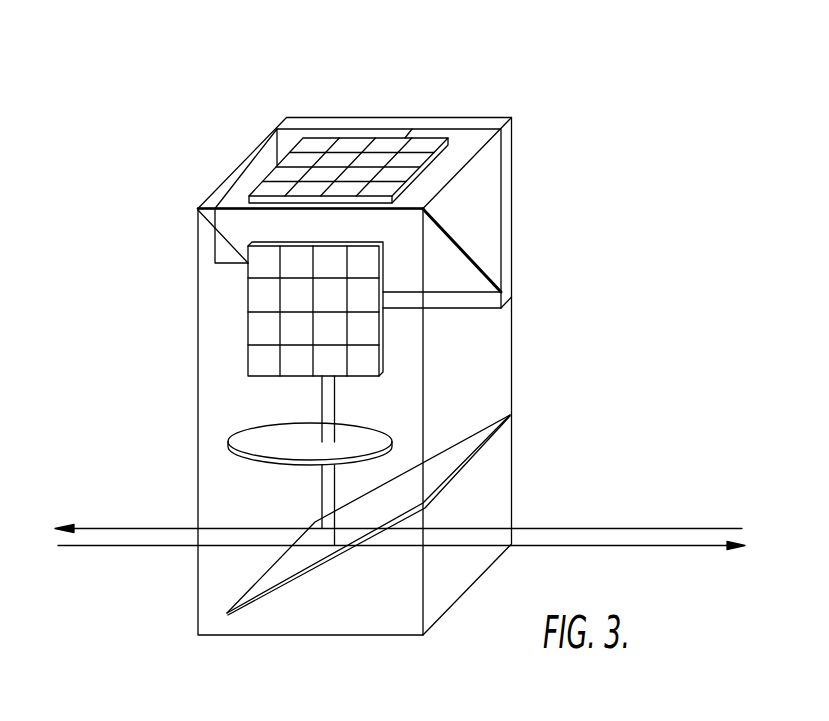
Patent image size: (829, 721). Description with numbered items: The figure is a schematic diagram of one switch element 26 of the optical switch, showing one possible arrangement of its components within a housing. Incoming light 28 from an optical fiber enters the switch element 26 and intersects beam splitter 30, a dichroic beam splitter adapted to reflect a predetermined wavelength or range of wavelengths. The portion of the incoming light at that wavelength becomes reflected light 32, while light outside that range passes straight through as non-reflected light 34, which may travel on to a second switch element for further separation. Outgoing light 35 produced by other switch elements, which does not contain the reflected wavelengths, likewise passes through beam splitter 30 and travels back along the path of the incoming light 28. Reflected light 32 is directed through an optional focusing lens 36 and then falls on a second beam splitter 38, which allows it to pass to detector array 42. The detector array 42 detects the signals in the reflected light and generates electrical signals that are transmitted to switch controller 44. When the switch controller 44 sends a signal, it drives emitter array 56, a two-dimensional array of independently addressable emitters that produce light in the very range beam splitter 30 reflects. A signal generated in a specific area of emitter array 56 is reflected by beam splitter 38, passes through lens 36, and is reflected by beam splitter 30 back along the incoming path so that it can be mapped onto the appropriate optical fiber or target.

The switch element 26 is at (622, 94).
The incoming light 28 is at (98, 546).
The beam splitter 30 is at (292, 580).
The reflected light 32 is at (343, 482).
The non-reflected light 34 is at (675, 547).
The outgoing light 35 is at (124, 528).
The focusing lens 36 is at (229, 440).
The beam splitter 38 is at (480, 264).
The detector array 42 is at (449, 147).
The switch controller 44 is at (382, 117).
The emitter array 56 is at (247, 325).